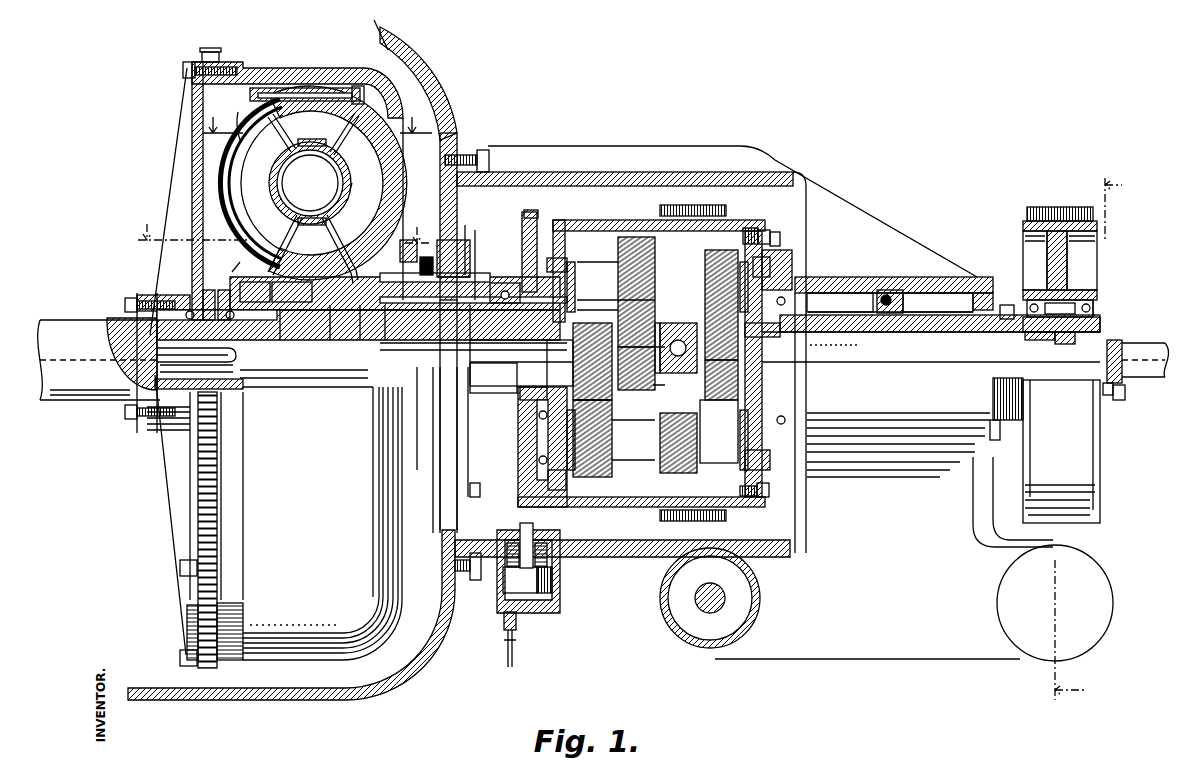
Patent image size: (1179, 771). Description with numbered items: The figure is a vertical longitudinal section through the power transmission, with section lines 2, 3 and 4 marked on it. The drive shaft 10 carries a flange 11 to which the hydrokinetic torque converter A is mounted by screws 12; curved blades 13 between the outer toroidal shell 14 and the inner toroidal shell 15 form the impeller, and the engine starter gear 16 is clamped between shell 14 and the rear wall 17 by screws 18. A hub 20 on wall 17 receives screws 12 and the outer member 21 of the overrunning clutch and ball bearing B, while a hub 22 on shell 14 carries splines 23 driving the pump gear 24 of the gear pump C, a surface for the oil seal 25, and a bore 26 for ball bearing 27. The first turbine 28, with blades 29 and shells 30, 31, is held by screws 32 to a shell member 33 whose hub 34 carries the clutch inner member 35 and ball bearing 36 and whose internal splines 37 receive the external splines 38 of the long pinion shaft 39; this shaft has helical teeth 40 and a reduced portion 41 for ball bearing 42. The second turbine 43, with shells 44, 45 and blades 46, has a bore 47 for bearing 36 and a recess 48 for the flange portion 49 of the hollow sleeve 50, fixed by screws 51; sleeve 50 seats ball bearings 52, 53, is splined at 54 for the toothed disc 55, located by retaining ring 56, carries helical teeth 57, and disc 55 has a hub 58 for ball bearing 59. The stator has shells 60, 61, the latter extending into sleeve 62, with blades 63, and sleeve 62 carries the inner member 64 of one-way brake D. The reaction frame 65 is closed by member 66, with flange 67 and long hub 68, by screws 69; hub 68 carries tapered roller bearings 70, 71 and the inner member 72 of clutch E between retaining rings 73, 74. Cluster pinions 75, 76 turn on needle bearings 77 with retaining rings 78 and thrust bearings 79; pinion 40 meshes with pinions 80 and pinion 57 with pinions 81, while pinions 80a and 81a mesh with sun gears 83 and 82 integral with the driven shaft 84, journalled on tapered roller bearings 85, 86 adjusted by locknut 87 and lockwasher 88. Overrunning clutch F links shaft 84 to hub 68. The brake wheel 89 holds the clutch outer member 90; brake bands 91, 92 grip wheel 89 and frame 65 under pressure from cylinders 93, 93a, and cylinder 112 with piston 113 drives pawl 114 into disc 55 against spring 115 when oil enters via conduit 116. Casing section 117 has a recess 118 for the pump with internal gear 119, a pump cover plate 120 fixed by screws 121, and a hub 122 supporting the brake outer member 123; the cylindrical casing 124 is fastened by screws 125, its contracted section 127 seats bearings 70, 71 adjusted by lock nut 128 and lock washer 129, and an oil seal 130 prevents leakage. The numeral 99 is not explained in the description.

The drive shaft 10 is at (66, 326).
The flange 11 is at (148, 296).
The screws 12 is at (125, 302).
The curved blades 13 is at (338, 183).
The outer toroidal shell 14 is at (404, 152).
The inner toroidal shell 15 is at (352, 184).
The engine starter gear 16 is at (205, 38).
The rear wall 17 is at (191, 143).
The screws 18 is at (188, 64).
The hub 20 is at (180, 290).
The outer member 21 is at (194, 296).
The hub 22 is at (378, 378).
The splines 23 is at (447, 262).
The pump gear 24 is at (445, 256).
The oil seal 25 is at (413, 264).
The bore 26 is at (349, 255).
The ball bearing 27 is at (360, 263).
The turbine 28 is at (322, 110).
The curved blades 29 is at (307, 135).
The inner toroidal shell 30 is at (310, 183).
The outer toroidal shell 31 is at (302, 84).
The screws 32 is at (364, 90).
The shell member 33 is at (238, 116).
The hub 34 is at (120, 360).
The inner member 35 is at (112, 348).
The ball bearing 36 is at (238, 352).
The internal splines 37 is at (218, 392).
The external splines 38 is at (192, 385).
The long pinion shaft 39 is at (282, 380).
The helical teeth 40 is at (628, 388).
The reduced portion 41 is at (656, 388).
The ball bearing 42 is at (664, 325).
The turbine 43 is at (233, 167).
The outer toroidal shell 44 is at (222, 185).
The inner toroidal shell 45 is at (277, 184).
The curved blades 46 is at (262, 183).
The bore 47 is at (252, 322).
The recess 48 is at (248, 280).
The flange portion 49 is at (243, 262).
The long hollow sleeve 50 is at (338, 330).
The screws 51 is at (292, 275).
The ball bearing 52 is at (298, 290).
The ball bearing 53 is at (588, 312).
The splines 54 is at (522, 335).
The toothed disc 55 is at (545, 214).
The retaining ring 56 is at (592, 354).
The helical teeth 57 is at (570, 355).
The hub 58 is at (500, 363).
The ball bearing 59 is at (505, 282).
The inner toroidal shell 60 is at (312, 218).
The outer toroidal shell 61 is at (308, 330).
The long hollow sleeve 62 is at (375, 325).
The curved blades 63 is at (312, 245).
The inner member 64 is at (492, 328).
The hollow cylindrical frame 65 is at (618, 226).
The member 66 is at (782, 258).
The circular flange portion 67 is at (752, 227).
The long hub 68 is at (942, 332).
The screws 69 is at (775, 233).
The tapered roller bearing 70 is at (816, 304).
The tapered roller bearing 71 is at (1004, 305).
The inner member 72 is at (1045, 336).
The retaining ring 73 is at (1030, 336).
The retaining ring 74 is at (1100, 324).
The cluster pinion 75 is at (658, 272).
The cluster pinion 76 is at (648, 462).
The needle bearings 77 is at (568, 268).
The retaining rings 78 is at (538, 458).
The thrust bearings 79 is at (576, 272).
The pinions 80 is at (620, 241).
The pinions 80a is at (716, 295).
The pinions 81 is at (612, 432).
The pinions 81a is at (676, 473).
The sun gear 82 is at (683, 322).
The sun gear 83 is at (718, 400).
The driven shaft 84 is at (1130, 355).
The tapered roller bearing 85 is at (754, 340).
The tapered roller bearing 86 is at (1095, 338).
The locknut 87 is at (1118, 392).
The lockwasher 88 is at (1112, 400).
The brake wheel 89 is at (1023, 226).
The outer member 90 is at (1097, 306).
The brake band 91 is at (1055, 207).
The brake band 92 is at (660, 206).
The cylinder 93 is at (1100, 585).
The cylinder 93a is at (665, 640).
The pin 99 is at (715, 600).
The cylinder 112 is at (560, 600).
The piston 113 is at (560, 574).
The pawl 114 is at (538, 527).
The spring 115 is at (558, 540).
The conduit 116 is at (516, 658).
The casing section 117 is at (440, 72).
The recess 118 is at (438, 225).
The internal gear 119 is at (470, 228).
The pump cover plate 120 is at (468, 505).
The screws 121 is at (480, 490).
The hub 122 is at (513, 260).
The outer member 123 is at (420, 325).
The casing 124 is at (612, 174).
The screws 125 is at (484, 150).
The contracted section 127 is at (866, 285).
The lock nut 128 is at (1020, 415).
The lock washer 129 is at (998, 430).
The oil seal 130 is at (898, 290).
The hydrokinetic torque converter A is at (190, 108).
The overrunning clutch and ball bearing B is at (110, 330).
The gear pump C is at (482, 261).
The one-way brake D is at (462, 338).
The combination overrunning clutch and ball bearing E is at (1065, 300).
The overrunning clutch F is at (800, 340).
The section line 2 is at (317, 120).
The section line 3 is at (281, 230).
The section line 4 is at (1095, 438).